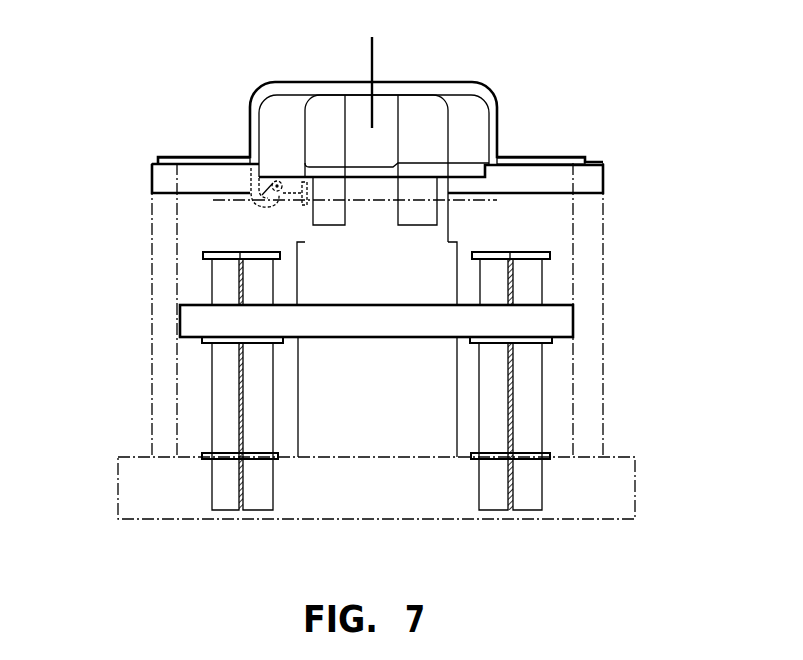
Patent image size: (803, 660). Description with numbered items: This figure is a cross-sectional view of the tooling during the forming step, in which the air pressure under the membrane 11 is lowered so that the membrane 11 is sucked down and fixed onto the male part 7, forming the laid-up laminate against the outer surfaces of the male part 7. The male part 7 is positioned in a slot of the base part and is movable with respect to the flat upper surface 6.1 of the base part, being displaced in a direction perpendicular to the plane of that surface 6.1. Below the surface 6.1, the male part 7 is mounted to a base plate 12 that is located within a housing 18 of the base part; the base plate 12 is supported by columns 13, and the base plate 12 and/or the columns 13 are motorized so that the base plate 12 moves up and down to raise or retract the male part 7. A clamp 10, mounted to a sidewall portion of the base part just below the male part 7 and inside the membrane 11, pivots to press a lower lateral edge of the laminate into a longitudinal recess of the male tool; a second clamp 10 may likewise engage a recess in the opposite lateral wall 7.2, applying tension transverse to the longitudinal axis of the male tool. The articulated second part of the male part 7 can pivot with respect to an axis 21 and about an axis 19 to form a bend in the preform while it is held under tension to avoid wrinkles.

The male part 7 is at (283, 145).
The opposite lateral wall 7.2 is at (257, 130).
The axis 19 is at (375, 43).
The membrane 11 is at (495, 103).
The upper surface 6.1 is at (193, 170).
The clamp 10 is at (250, 174).
The axis 21 is at (228, 203).
The housing 18 is at (150, 345).
The base plate 12 is at (548, 325).
The columns 13 is at (528, 407).